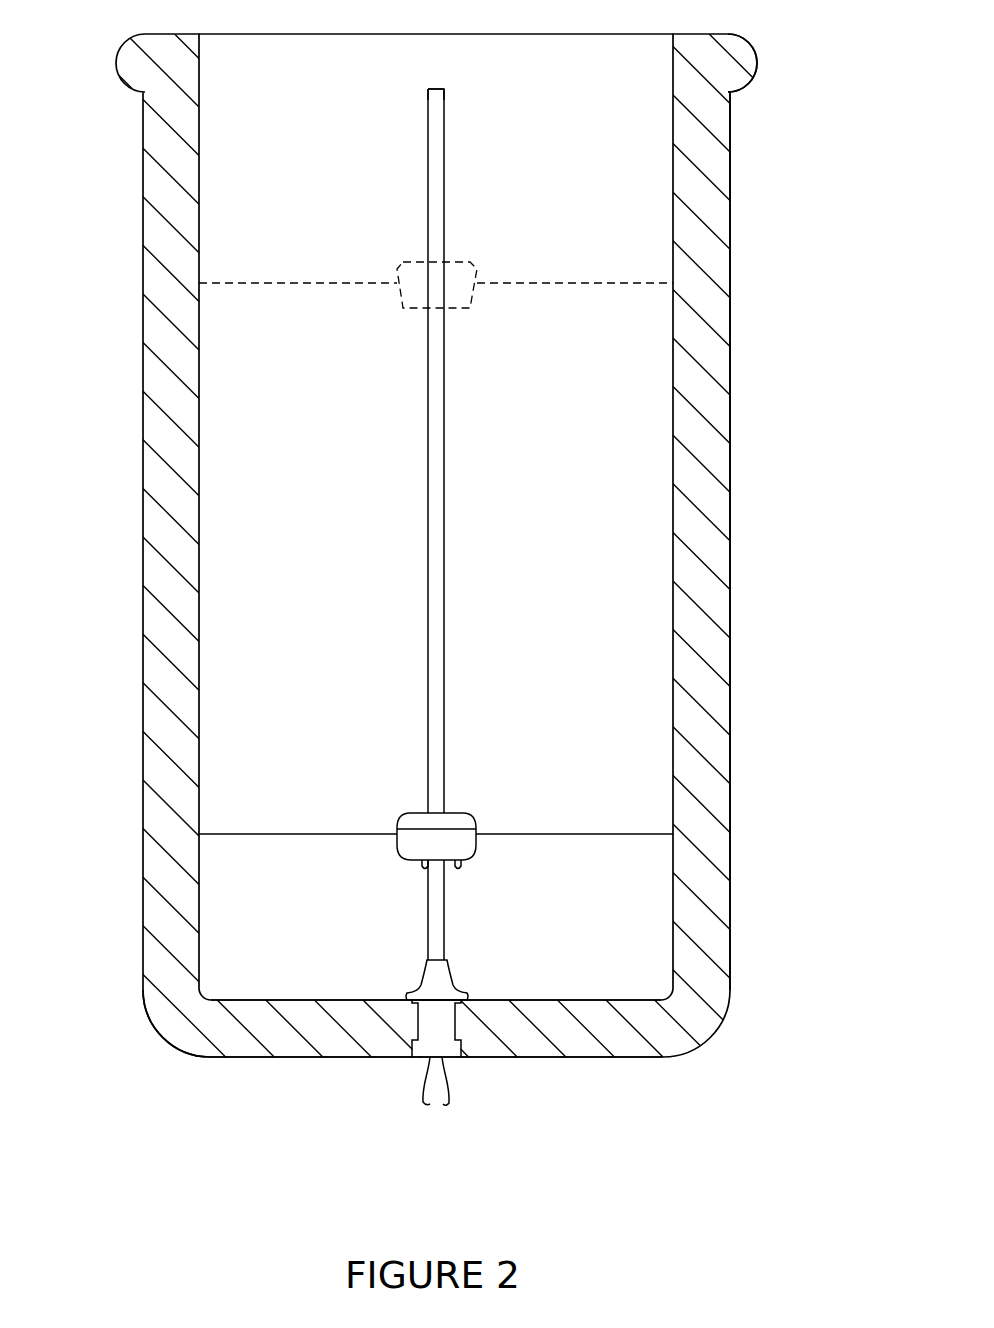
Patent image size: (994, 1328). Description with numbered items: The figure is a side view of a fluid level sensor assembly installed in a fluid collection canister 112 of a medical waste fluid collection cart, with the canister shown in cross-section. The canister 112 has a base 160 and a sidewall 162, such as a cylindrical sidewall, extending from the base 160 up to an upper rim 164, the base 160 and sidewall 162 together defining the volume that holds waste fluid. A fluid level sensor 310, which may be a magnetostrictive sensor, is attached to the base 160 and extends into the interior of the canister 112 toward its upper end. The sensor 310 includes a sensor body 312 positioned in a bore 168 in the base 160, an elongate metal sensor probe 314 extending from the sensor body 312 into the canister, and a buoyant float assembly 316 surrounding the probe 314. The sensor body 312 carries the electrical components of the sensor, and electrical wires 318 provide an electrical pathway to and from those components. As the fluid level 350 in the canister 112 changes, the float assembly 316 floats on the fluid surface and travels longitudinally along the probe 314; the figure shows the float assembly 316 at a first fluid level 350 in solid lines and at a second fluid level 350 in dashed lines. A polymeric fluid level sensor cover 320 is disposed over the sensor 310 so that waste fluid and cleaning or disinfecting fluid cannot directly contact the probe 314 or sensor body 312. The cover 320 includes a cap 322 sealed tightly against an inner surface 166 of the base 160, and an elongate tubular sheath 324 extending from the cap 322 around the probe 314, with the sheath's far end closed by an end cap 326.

The fluid collection canister 112 is at (160, 278).
The base 160 is at (250, 1042).
The sidewall 162 is at (717, 533).
The upper rim 164 is at (748, 33).
The inner surface 166 is at (328, 999).
The bore 168 is at (468, 1012).
The fluid level sensor 310 is at (273, 892).
The sensor body 312 is at (418, 1027).
The elongate sensor probe 314 is at (449, 504).
The float assembly 316 is at (410, 268).
The electrical wires 318 is at (450, 1095).
The fluid level sensor cover 320 is at (445, 1025).
The cap 322 is at (430, 975).
The elongate tubular sheath 324 is at (428, 562).
The end cap 326 is at (436, 89).
The fluid level 350 is at (645, 283).